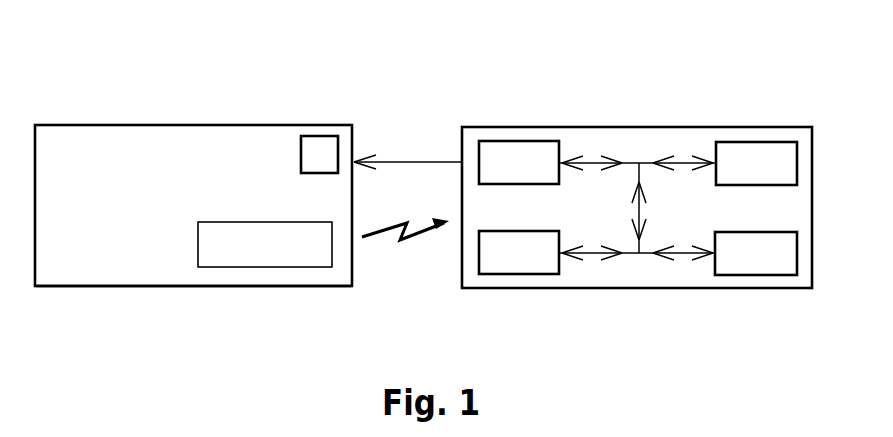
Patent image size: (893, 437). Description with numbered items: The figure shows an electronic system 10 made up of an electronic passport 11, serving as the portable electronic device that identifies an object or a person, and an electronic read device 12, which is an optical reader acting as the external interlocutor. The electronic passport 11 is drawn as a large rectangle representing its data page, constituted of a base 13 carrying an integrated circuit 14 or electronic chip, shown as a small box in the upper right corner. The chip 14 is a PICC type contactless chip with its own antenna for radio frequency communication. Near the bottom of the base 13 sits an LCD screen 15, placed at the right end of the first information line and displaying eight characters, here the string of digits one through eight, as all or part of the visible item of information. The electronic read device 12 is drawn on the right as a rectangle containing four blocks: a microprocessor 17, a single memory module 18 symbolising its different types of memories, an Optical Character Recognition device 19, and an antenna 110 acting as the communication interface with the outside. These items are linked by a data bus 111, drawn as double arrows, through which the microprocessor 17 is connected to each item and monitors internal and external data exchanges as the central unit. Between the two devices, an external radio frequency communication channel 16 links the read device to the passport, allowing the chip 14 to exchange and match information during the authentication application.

The electronic system 10 is at (236, 58).
The electronic passport 11 is at (137, 124).
The electronic read device 12 is at (622, 127).
The base 13 is at (167, 288).
The integrated circuit 14 is at (316, 146).
The LCD screen 15 is at (285, 258).
The external radio frequency communication channel 16 is at (410, 160).
The microprocessor 17 is at (752, 150).
The memory module 18 is at (748, 265).
The Optical Character Recognition device 19 is at (518, 258).
The antenna 110 is at (536, 150).
The data bus 111 is at (648, 162).